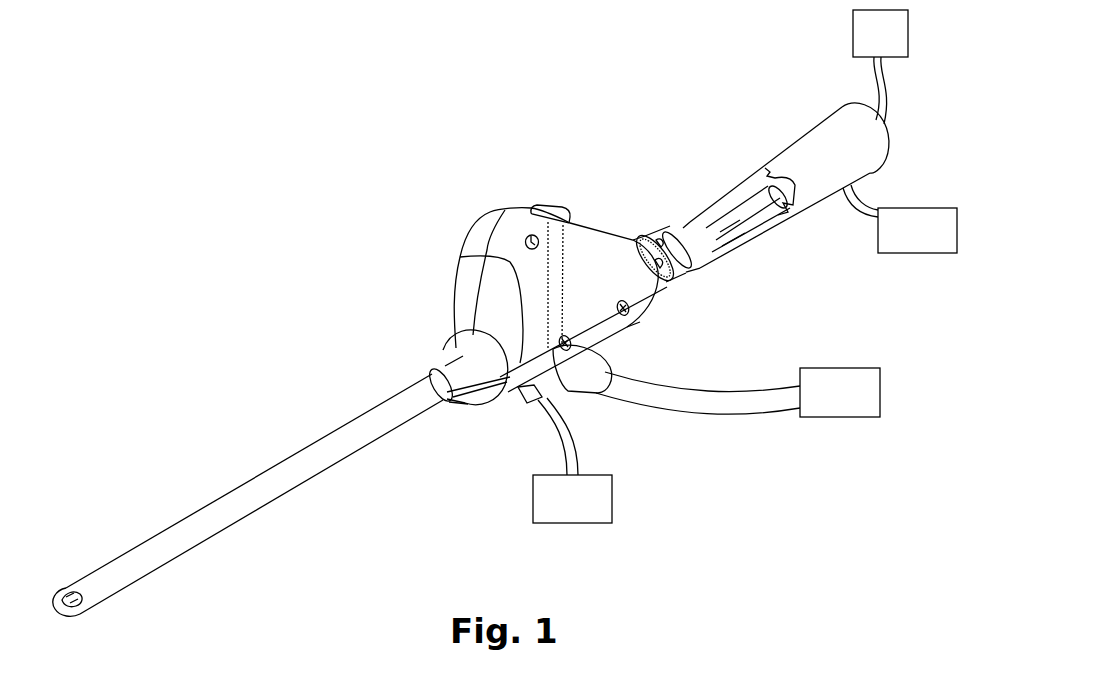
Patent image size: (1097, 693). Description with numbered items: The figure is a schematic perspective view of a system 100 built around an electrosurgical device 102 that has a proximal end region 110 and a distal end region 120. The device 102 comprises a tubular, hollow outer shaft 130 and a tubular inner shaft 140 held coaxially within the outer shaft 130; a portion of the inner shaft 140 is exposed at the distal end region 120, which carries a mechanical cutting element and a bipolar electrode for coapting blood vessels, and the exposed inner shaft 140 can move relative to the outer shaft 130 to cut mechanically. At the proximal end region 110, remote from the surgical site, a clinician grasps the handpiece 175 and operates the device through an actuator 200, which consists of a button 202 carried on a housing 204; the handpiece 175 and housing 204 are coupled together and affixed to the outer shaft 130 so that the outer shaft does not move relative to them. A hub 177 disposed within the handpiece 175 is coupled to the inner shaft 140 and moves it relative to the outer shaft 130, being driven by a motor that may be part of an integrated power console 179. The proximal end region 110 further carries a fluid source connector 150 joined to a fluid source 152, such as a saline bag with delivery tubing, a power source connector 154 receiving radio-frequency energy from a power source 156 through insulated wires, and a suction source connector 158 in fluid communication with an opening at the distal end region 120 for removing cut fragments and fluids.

The system 100 is at (305, 217).
The electrosurgical device 102 is at (407, 488).
The proximal end region 110 is at (480, 178).
The distal end region 120 is at (55, 586).
The outer shaft 130 is at (250, 478).
The inner shaft 140 is at (84, 612).
The fluid source connector 150 is at (522, 402).
The fluid source 152 is at (612, 492).
The power source connector 154 is at (912, 257).
The power source 156 is at (845, 366).
The suction source connector 158 is at (858, 212).
The handpiece 175 is at (790, 142).
The hub 177 is at (713, 204).
The integrated power console 179 is at (908, 33).
The actuator 200 is at (600, 227).
The button 202 is at (560, 206).
The housing 204 is at (611, 238).